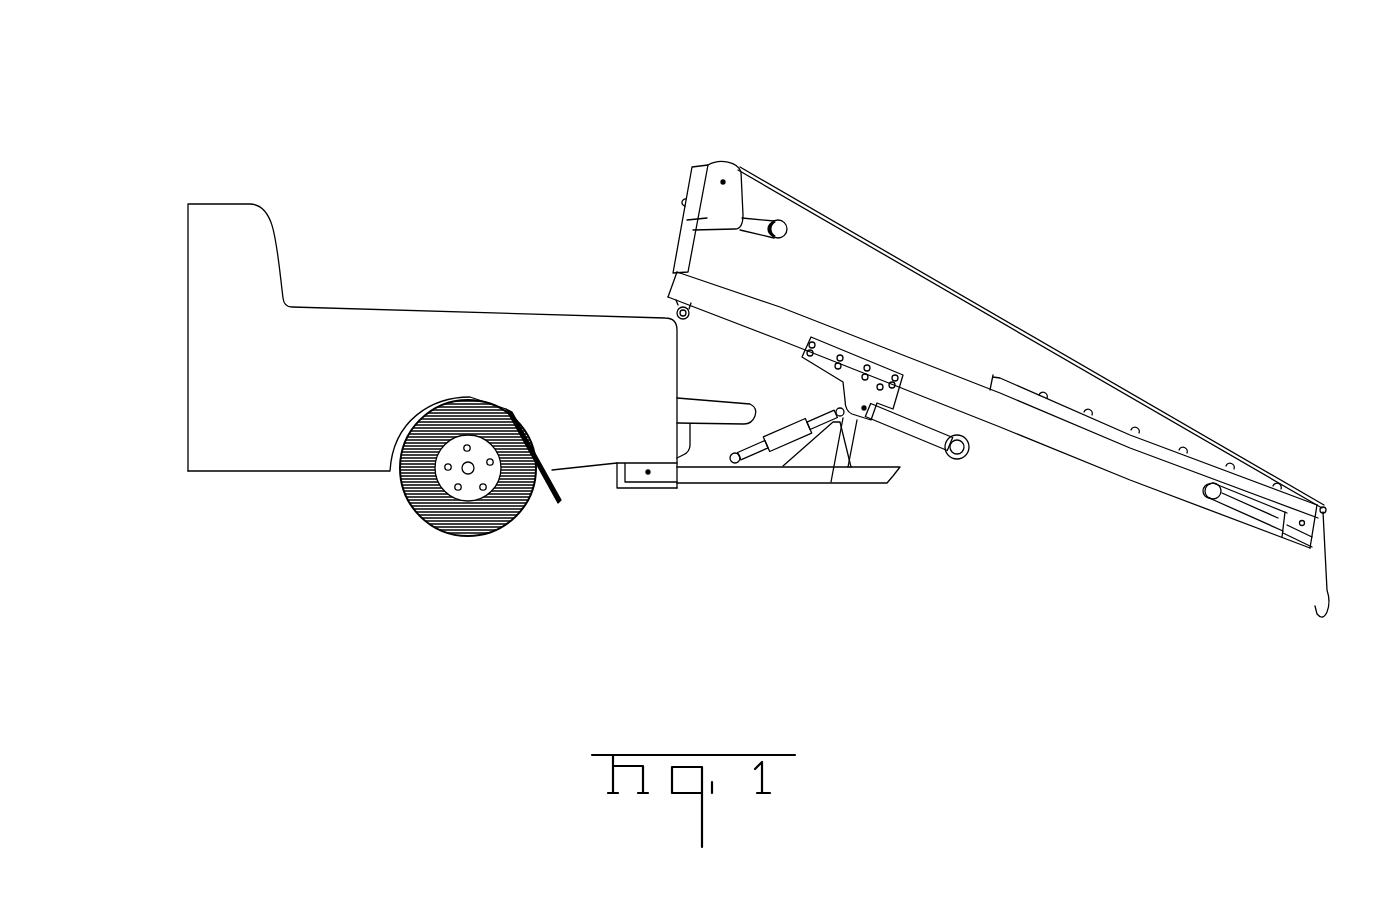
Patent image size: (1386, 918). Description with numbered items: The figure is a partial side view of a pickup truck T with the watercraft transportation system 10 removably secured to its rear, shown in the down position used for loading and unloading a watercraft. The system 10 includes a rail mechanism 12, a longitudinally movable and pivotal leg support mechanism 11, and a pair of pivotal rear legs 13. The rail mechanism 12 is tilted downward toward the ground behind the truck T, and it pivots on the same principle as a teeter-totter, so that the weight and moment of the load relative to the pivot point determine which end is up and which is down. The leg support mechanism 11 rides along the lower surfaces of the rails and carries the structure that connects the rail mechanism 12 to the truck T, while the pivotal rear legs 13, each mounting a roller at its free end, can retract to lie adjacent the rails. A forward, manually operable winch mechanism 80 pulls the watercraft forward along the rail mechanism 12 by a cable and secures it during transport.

The pickup truck T is at (345, 303).
The winch mechanism 80 is at (703, 166).
The rail mechanism 12 is at (800, 313).
The watercraft transportation system 10 is at (1045, 386).
The longitudinally movable and pivotal leg support mechanism 11 is at (868, 426).
The pivotal rear legs 13 is at (1258, 527).